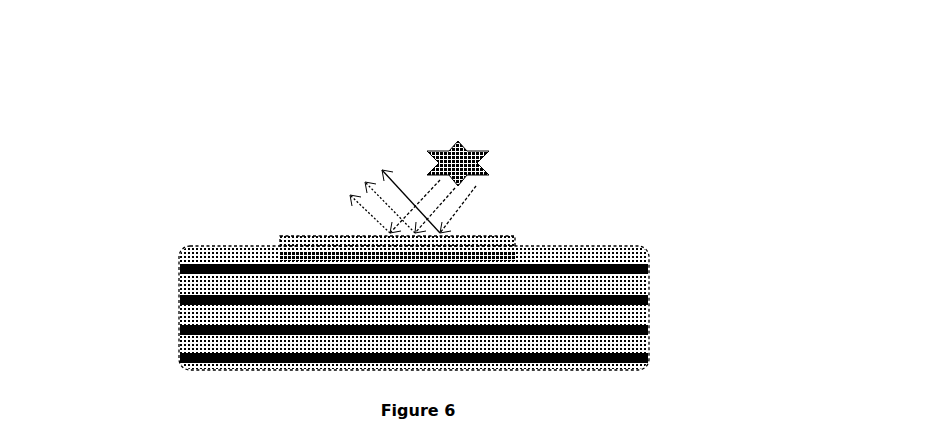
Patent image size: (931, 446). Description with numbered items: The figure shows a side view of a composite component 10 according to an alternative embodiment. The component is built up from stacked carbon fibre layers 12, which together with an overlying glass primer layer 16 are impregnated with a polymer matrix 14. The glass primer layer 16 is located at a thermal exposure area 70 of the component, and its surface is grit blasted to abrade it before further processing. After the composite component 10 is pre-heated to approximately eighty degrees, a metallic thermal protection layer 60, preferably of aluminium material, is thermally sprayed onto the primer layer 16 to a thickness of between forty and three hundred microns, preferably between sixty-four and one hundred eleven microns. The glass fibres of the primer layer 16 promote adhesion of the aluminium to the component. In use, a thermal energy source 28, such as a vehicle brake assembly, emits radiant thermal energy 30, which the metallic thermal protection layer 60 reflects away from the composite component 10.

The composite component 10 is at (763, 237).
The carbon fibre layers 12 is at (650, 358).
The polymer matrix 14 is at (202, 258).
The glass primer layer 16 is at (280, 261).
The thermal energy source 28 is at (478, 168).
The radiant thermal energy 30 is at (377, 165).
The metallic thermal protection layer 60 is at (305, 243).
The thermal exposure area 70 is at (320, 153).